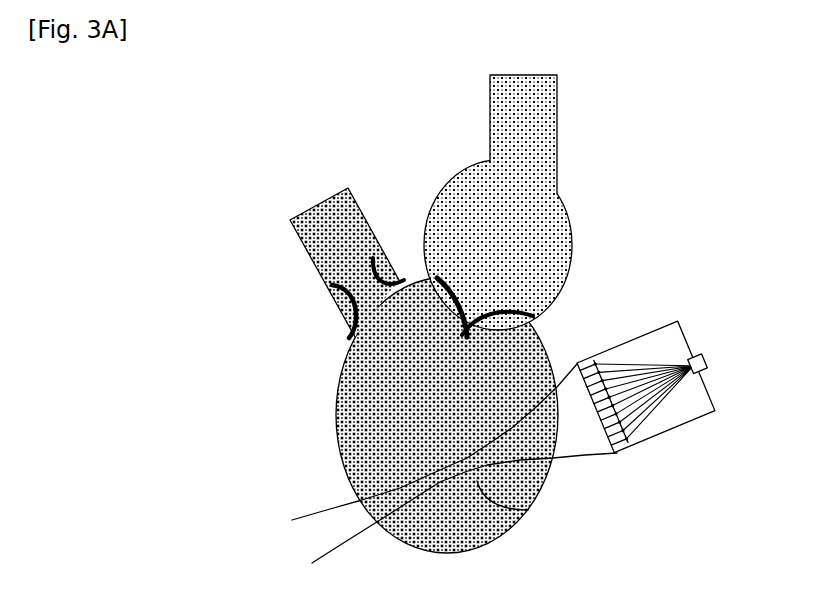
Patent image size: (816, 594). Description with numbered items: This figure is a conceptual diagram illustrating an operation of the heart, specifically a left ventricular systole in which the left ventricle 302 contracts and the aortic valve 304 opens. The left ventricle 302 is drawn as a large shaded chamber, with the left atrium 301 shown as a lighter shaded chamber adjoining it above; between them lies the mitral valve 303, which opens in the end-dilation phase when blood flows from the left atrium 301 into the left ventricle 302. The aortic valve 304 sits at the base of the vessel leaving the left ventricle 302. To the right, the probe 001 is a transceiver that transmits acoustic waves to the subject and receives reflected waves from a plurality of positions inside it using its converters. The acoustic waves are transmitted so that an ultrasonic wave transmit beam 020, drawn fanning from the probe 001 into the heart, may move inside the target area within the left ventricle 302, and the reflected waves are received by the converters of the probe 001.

The left atrium 301 is at (543, 213).
The left ventricle 302 is at (356, 397).
The mitral valve 303 is at (513, 310).
The aortic valve 304 is at (348, 303).
The probe 001 is at (698, 420).
The ultrasonic wave transmit beam 020 is at (530, 510).